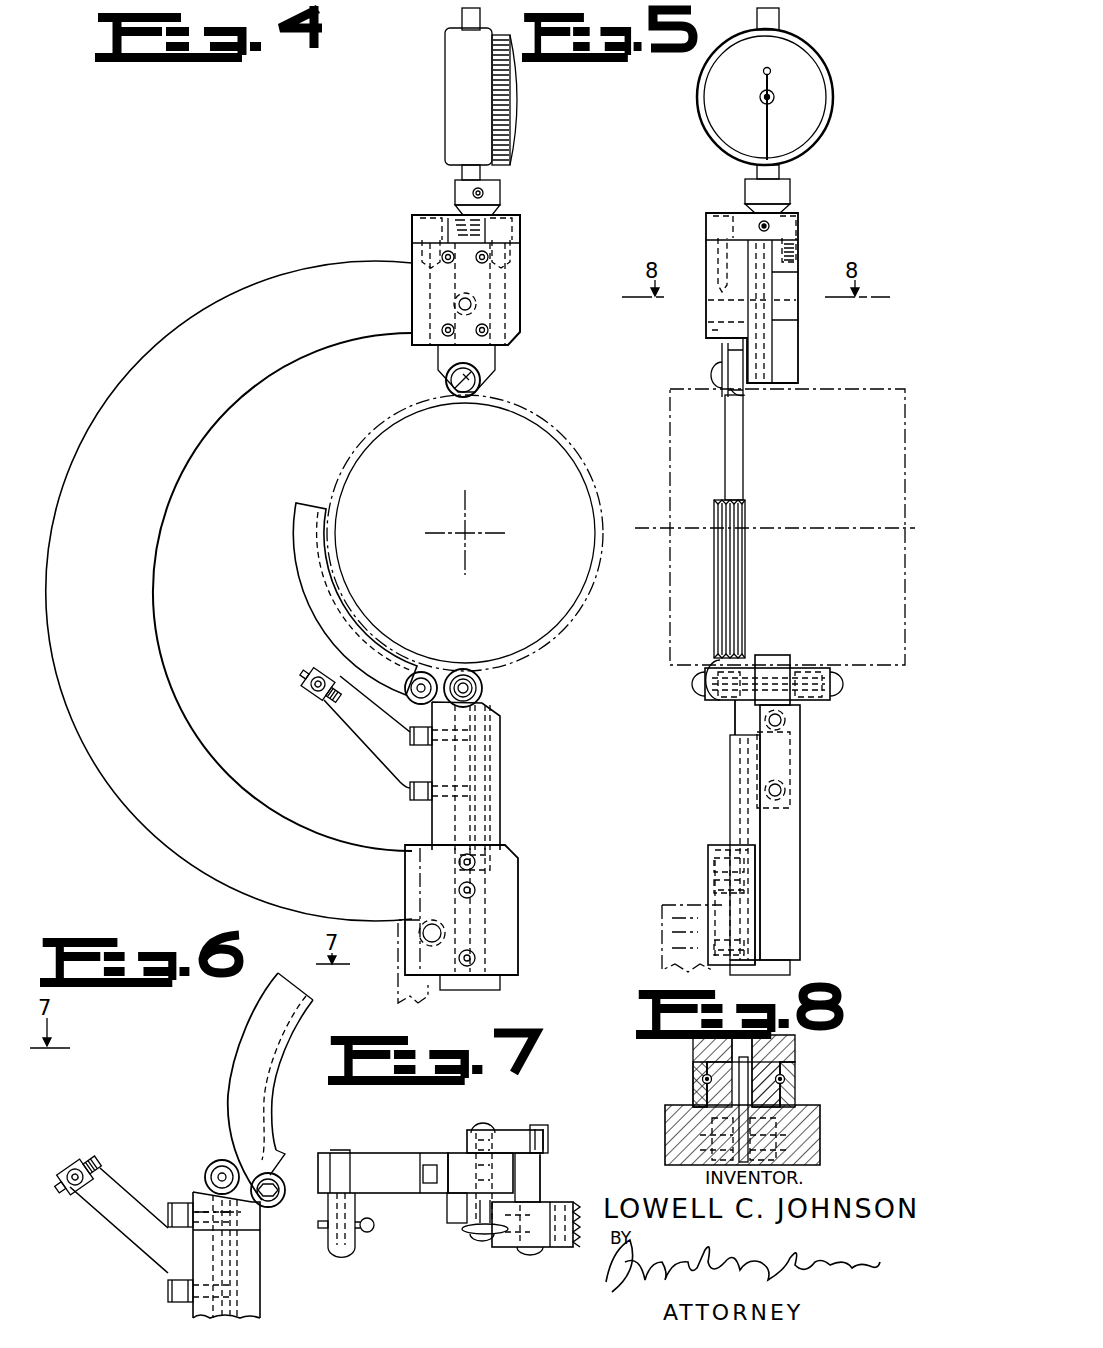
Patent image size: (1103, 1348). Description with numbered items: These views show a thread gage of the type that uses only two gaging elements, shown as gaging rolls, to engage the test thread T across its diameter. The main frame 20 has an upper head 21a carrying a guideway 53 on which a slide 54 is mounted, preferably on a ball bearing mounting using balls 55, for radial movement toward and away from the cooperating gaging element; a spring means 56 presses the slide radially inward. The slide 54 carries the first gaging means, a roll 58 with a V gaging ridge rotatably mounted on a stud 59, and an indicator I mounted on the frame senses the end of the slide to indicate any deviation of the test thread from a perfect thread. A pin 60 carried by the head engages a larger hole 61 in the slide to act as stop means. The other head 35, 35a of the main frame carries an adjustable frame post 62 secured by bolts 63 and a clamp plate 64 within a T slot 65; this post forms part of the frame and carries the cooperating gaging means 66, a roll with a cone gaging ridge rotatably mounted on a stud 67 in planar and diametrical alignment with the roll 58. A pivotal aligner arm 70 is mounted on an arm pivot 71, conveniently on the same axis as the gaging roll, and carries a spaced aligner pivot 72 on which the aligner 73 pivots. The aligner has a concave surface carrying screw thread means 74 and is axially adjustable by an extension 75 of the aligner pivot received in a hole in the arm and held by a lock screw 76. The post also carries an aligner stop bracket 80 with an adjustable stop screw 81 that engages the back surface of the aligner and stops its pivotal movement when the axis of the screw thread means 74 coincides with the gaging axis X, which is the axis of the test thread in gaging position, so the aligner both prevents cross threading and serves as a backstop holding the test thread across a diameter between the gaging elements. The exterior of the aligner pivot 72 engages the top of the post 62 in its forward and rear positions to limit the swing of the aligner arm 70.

In FIG. 4, the dial indicator I is at (460, 95).
In FIG. 5, the dial indicator I is at (712, 103).
In FIG. 4, the C-shaped frame 20 is at (166, 340).
In FIG. 4, the upper head 21a is at (515, 325).
In FIG. 5, the upper head 21a is at (712, 312).
In FIG. 8, the upper head 21a is at (822, 1124).
In FIG. 7, the arm 35 is at (460, 1162).
In FIG. 4, the other head 35a is at (520, 943).
In FIG. 5, the other head 35a is at (715, 904).
In FIG. 5, the guideway 53 is at (765, 321).
In FIG. 8, the guideway 53 is at (797, 1091).
In FIG. 5, the slide 54 is at (790, 357).
In FIG. 8, the slide 54 is at (797, 1047).
In FIG. 8, the balls 55 is at (790, 1077).
In FIG. 4, the spring means 56 is at (430, 236).
In FIG. 5, the spring means 56 is at (798, 248).
In FIG. 4, the roll 58 is at (482, 388).
In FIG. 5, the roll 58 is at (708, 366).
In FIG. 5, the stud 59 is at (746, 397).
In FIG. 4, the pin 60 is at (472, 304).
In FIG. 8, the pin 60 is at (740, 1166).
In FIG. 8, the larger hole 61 is at (723, 1046).
In FIG. 4, the adjustable frame post 62 is at (500, 755).
In FIG. 5, the adjustable frame post 62 is at (778, 832).
In FIG. 6, the adjustable frame post 62 is at (250, 1258).
In FIG. 4, the bolts 63 is at (475, 890).
In FIG. 5, the bolts 63 is at (712, 868).
In FIG. 4, the clamp plate 64 is at (470, 850).
In FIG. 5, the clamp plate 64 is at (755, 870).
In FIG. 4, the T slot 65 is at (472, 830).
In FIG. 5, the T slot 65 is at (738, 775).
In FIG. 6, the T slot 65 is at (253, 1277).
In FIG. 4, the cooperating gaging means 66 is at (468, 670).
In FIG. 5, the cooperating gaging means 66 is at (725, 702).
In FIG. 6, the cooperating gaging means 66 is at (210, 1165).
In FIG. 7, the cooperating gaging means 66 is at (472, 1236).
In FIG. 4, the stud 67 is at (482, 690).
In FIG. 5, the stud 67 is at (738, 706).
In FIG. 4, the pivotal aligner arm 70 is at (428, 672).
In FIG. 5, the pivotal aligner arm 70 is at (812, 667).
In FIG. 6, the pivotal aligner arm 70 is at (255, 1160).
In FIG. 7, the pivotal aligner arm 70 is at (507, 1130).
In FIG. 5, the arm pivot 71 is at (802, 698).
In FIG. 7, the arm pivot 71 is at (465, 1130).
In FIG. 6, the aligner pivot 72 is at (272, 1207).
In FIG. 7, the aligner pivot 72 is at (558, 1203).
In FIG. 5, the aligner 73 is at (740, 502).
In FIG. 6, the aligner 73 is at (240, 1060).
In FIG. 7, the aligner 73 is at (512, 1250).
In FIG. 4, the screw thread means 74 is at (357, 612).
In FIG. 5, the screw thread means 74 is at (748, 572).
In FIG. 6, the screw thread means 74 is at (274, 1102).
In FIG. 7, the screw thread means 74 is at (585, 1243).
In FIG. 4, the extension 75 is at (303, 600).
In FIG. 7, the extension 75 is at (543, 1163).
In FIG. 7, the lock screw 76 is at (548, 1138).
In FIG. 4, the aligner stop bracket 80 is at (362, 738).
In FIG. 6, the aligner stop bracket 80 is at (125, 1230).
In FIG. 7, the aligner stop bracket 80 is at (384, 1190).
In FIG. 4, the adjustable stop screw 81 is at (300, 692).
In FIG. 6, the adjustable stop screw 81 is at (98, 1150).
In FIG. 7, the adjustable stop screw 81 is at (375, 1232).
In FIG. 4, the test thread T is at (603, 485).
In FIG. 5, the test thread T is at (787, 527).
In FIG. 4, the gaging axis X is at (466, 533).
In FIG. 5, the gaging axis X is at (660, 535).